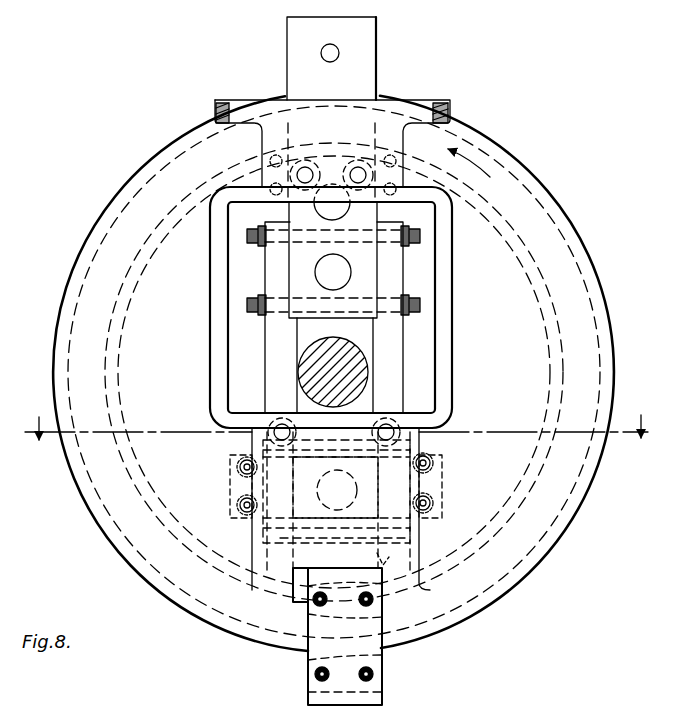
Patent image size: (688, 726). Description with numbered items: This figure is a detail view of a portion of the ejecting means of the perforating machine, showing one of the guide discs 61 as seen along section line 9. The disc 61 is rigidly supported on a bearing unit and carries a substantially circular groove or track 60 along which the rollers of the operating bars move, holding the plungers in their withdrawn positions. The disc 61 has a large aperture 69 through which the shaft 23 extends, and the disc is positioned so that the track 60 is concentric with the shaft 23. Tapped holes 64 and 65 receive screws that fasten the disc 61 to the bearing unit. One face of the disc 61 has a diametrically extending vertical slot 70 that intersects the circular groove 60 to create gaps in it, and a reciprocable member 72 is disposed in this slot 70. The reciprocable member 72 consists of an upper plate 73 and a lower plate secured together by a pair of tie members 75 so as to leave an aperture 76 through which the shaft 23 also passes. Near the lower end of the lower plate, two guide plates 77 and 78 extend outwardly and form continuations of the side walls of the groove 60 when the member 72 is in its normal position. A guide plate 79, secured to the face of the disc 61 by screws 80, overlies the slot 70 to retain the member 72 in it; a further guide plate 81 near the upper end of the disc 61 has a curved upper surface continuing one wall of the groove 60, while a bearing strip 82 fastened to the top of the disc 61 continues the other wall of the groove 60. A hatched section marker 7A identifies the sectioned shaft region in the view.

The section line 9- 9 is at (335, 425).
The shaft 23 is at (360, 366).
The groove or track 60 is at (568, 497).
The guide disc 61 is at (579, 243).
The tapped holes 64 is at (352, 172).
The tapped holes 65 is at (380, 426).
The large aperture 69 is at (436, 340).
The vertical slot 70 is at (314, 652).
The reciprocable member 72 is at (379, 52).
The upper plate 73 is at (378, 84).
The tie members 75 is at (268, 270).
The aperture 76 is at (298, 333).
The guide plate 77 is at (383, 611).
The guide plate 78 is at (375, 673).
The guide plate 79 is at (437, 479).
The bracket 7A is at (394, 567).
The screws 80 is at (238, 467).
The guide plate 81 is at (403, 141).
The bearing strip 82 is at (243, 100).